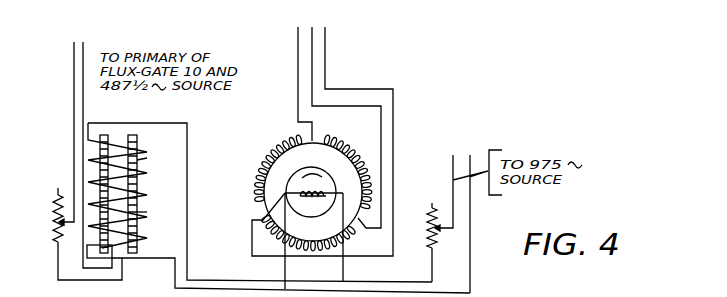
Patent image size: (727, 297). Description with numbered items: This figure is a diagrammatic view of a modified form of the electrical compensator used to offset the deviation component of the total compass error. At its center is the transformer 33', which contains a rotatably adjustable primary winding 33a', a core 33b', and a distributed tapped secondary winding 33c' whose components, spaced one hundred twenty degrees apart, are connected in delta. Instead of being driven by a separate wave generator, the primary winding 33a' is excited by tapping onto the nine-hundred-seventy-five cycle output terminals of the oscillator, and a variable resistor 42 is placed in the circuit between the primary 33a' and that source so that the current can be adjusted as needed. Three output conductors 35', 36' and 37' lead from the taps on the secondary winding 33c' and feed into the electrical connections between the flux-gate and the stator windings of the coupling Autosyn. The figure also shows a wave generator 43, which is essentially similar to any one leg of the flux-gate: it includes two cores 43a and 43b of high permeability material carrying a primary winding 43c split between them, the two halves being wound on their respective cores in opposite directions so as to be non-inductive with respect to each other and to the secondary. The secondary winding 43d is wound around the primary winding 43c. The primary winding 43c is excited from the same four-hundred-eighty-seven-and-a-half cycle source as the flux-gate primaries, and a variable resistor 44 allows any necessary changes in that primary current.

The transformer 33' is at (292, 216).
The primary winding 33a' is at (261, 176).
The core 33b' is at (345, 212).
The secondary winding 33c' is at (348, 165).
The output conductor 35' is at (322, 141).
The output conductor 36' is at (346, 127).
The output conductor 37' is at (330, 84).
The variable resistor 42 is at (430, 236).
The wave generator 43 is at (155, 283).
The core 43a is at (105, 134).
The core 43b is at (134, 134).
The primary winding 43c is at (141, 160).
The secondary winding 43d is at (141, 212).
The variable resistor 44 is at (66, 222).